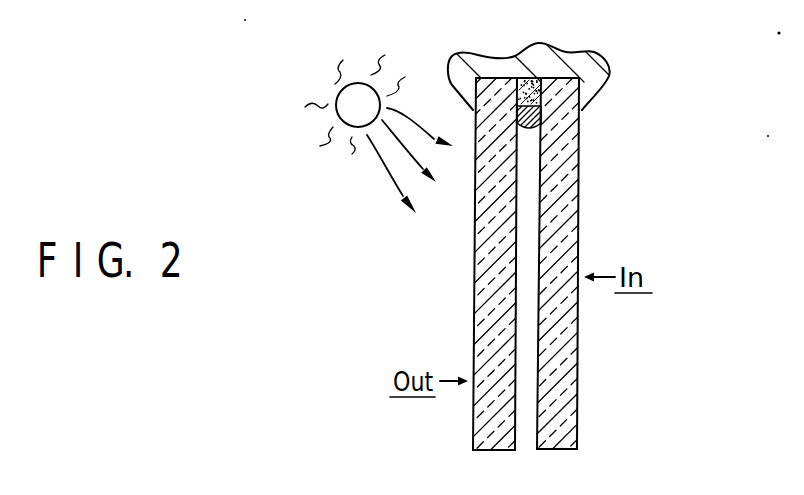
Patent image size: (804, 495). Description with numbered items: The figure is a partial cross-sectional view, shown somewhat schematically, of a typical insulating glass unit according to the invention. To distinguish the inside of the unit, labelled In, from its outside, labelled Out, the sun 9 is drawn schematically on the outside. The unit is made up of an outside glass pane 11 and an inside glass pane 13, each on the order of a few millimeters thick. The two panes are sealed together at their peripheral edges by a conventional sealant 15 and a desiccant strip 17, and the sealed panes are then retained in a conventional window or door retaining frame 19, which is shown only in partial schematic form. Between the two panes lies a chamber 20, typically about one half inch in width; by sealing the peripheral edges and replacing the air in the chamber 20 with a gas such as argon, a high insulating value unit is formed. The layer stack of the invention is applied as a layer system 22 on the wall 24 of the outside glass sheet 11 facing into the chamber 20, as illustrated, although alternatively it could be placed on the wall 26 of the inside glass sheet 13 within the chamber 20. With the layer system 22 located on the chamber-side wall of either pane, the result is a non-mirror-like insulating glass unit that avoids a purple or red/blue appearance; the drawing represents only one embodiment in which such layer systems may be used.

The sun 9 is at (371, 115).
The outside glass pane 11 is at (480, 413).
The inside glass pane 13 is at (573, 386).
The sealant 15 is at (553, 46).
The desiccant strip 17 is at (540, 116).
The retaining frame 19 is at (487, 65).
The chamber 20 is at (527, 445).
The layer system 22 is at (521, 312).
The wall of outside glass sheet 24 is at (474, 446).
The wall of inside glass sheet 26 is at (538, 350).